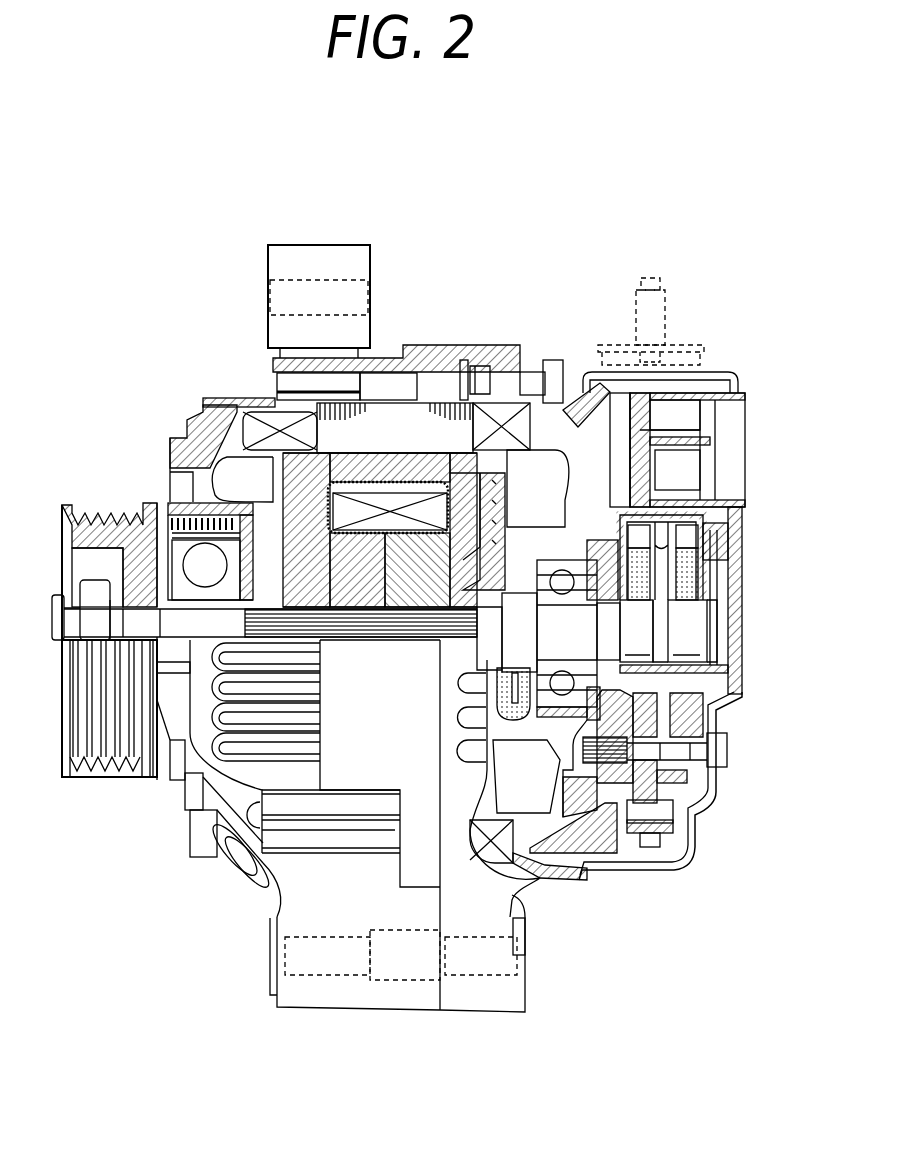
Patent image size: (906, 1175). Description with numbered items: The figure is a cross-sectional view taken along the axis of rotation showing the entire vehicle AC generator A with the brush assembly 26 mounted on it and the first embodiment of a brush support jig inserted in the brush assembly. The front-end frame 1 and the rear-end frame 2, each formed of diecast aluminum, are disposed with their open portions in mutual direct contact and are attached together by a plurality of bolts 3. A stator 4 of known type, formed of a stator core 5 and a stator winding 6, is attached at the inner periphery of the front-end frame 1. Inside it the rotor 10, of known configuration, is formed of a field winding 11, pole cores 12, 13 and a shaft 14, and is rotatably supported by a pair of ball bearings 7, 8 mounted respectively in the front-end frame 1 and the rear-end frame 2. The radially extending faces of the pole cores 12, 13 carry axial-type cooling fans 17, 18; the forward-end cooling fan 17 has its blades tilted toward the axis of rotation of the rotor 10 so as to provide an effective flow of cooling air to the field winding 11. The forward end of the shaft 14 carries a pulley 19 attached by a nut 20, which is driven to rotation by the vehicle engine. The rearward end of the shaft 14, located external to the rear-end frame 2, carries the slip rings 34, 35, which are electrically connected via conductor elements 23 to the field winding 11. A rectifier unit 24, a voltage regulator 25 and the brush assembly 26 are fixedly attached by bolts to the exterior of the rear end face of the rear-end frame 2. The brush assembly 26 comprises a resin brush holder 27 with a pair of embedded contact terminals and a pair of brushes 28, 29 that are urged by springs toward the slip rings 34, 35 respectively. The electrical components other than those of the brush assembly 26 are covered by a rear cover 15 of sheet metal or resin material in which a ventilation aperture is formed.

The vehicle AC generator A is at (560, 202).
The front-end frame 1 is at (283, 890).
The rear-end frame 2 is at (490, 920).
The bolts 3 is at (333, 382).
The stator 4 is at (397, 383).
The stator core 5 is at (430, 400).
The stator winding 6 is at (250, 450).
The ball bearing 7 is at (228, 597).
The ball bearing 8 is at (555, 580).
The rotor 10 is at (238, 436).
The field winding 11 is at (377, 490).
The pole core 12 is at (310, 470).
The pole core 13 is at (447, 467).
The shaft 14 is at (153, 553).
The rear cover 15 is at (720, 375).
The cooling fan 17 is at (218, 470).
The cooling fan 18 is at (560, 560).
The pulley 19 is at (67, 505).
The nut 20 is at (90, 622).
The conductor elements 23 is at (540, 465).
The rectifier unit 24 is at (675, 792).
The voltage regulator 25 is at (740, 408).
The brush assembly 26 is at (715, 522).
The brush holder 27 is at (735, 540).
The brush 28 is at (645, 580).
The brush 29 is at (697, 590).
The slip ring 34 is at (645, 637).
The slip ring 35 is at (733, 650).